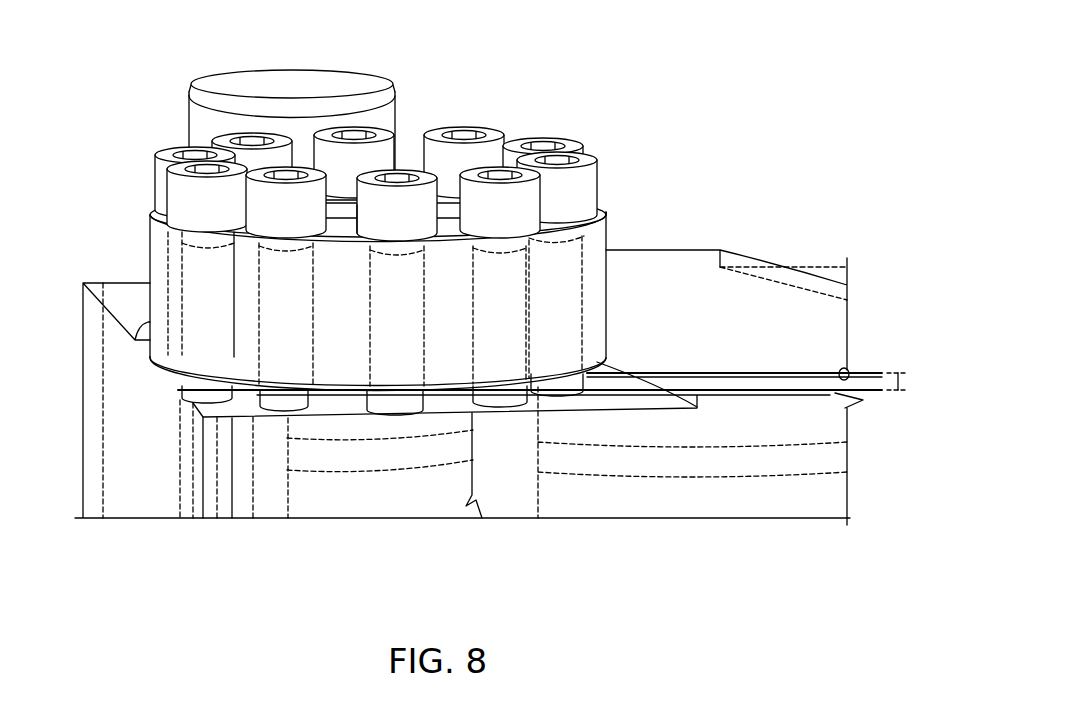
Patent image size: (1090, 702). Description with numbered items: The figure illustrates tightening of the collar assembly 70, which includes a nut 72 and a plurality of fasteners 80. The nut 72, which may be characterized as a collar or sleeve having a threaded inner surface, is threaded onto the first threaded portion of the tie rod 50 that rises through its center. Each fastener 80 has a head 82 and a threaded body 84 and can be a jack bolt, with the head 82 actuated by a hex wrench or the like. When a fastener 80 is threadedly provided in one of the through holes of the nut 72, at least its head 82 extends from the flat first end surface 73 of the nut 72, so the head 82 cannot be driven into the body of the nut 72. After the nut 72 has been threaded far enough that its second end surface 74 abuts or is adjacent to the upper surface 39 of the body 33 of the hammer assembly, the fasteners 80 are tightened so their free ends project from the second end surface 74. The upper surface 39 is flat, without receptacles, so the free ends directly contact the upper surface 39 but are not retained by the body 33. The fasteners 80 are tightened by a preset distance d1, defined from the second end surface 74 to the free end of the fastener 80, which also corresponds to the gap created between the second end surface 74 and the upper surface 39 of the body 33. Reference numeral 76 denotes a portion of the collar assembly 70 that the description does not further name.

The body 33 is at (93, 457).
The upper surface 39 is at (235, 408).
The tie rod 50 is at (340, 177).
The collar assembly 70 is at (530, 117).
The nut 72 is at (150, 217).
The first end surface 73 is at (422, 213).
The second end surface 74 is at (347, 391).
The body 76 is at (150, 262).
The fastener 80 is at (170, 148).
The head 82 is at (157, 170).
The threaded body 84 is at (282, 400).
The preset distance d1 is at (900, 383).